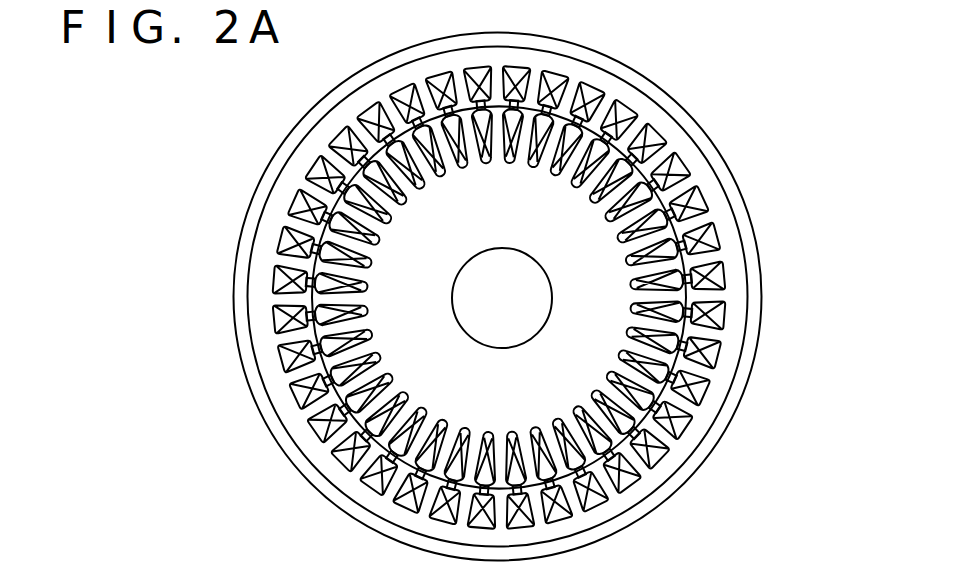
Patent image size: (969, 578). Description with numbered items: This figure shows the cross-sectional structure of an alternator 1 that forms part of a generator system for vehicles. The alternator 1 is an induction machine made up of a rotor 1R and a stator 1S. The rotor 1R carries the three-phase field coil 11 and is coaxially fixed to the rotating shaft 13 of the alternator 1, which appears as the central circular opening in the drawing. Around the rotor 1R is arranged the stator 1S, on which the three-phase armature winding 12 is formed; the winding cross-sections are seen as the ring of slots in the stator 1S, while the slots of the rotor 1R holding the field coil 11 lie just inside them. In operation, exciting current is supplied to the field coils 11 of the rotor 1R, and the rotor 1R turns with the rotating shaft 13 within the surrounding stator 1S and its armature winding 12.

The alternator 1 is at (720, 115).
The stator 1S is at (723, 377).
The rotor 1R is at (563, 387).
The three-phase field coil 11 is at (717, 217).
The three-phase armature winding 12 is at (727, 271).
The rotating shaft 13 is at (480, 304).